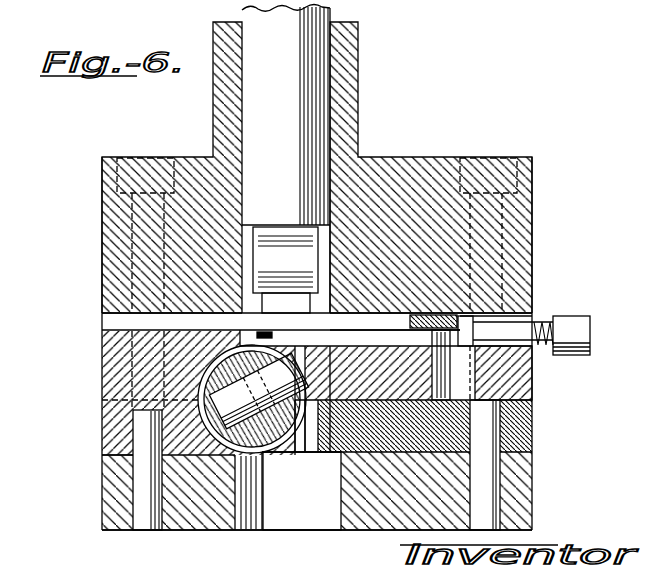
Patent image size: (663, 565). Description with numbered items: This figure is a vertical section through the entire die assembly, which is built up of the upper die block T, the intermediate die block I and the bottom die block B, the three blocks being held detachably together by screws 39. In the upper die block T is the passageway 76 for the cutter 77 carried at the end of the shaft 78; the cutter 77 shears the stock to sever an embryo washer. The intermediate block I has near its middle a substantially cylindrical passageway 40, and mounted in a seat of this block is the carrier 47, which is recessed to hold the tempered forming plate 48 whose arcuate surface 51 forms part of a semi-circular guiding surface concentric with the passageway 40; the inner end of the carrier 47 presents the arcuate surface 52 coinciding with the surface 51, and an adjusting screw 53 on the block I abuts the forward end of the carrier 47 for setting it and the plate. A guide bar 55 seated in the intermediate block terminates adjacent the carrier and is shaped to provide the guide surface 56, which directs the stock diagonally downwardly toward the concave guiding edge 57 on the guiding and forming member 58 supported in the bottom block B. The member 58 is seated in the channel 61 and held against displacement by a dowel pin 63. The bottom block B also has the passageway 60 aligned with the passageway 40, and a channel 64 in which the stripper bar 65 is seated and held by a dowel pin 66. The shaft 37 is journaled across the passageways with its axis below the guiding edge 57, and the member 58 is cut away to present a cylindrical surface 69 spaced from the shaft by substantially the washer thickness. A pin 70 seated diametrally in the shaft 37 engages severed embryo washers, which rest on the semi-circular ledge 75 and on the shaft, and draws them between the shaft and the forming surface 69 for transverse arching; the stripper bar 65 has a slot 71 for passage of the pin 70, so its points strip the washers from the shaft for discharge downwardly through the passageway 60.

The shaft 78 is at (305, 97).
The screws 39 is at (530, 196).
The upper die block T is at (520, 235).
The guide bar 55 is at (262, 312).
The guide surface 56 is at (287, 318).
The concave guiding edge 57 is at (255, 336).
The forming plate 48 is at (400, 316).
The cutter 77 is at (322, 238).
The passageway 76 is at (338, 316).
The arcuate surface 51 is at (397, 318).
The carrier 47 is at (447, 318).
The adjusting screw 53 is at (580, 332).
The intermediate die block I is at (523, 382).
The guiding and forming member 58 is at (113, 423).
The cylindrical surface 69 is at (203, 398).
The semi-circular ledge 75 is at (256, 399).
The dowel pin 63 is at (150, 488).
The channel 61 is at (107, 459).
The shaft 37 is at (257, 443).
The passageway 60 is at (308, 518).
The pin 70 is at (282, 440).
The slot 71 is at (300, 440).
The arcuate surface 52 is at (310, 420).
The passageway 40 is at (308, 402).
The stripper bar 65 is at (520, 418).
The channel 64 is at (397, 453).
The dowel pin 66 is at (488, 477).
The bottom die block B is at (518, 512).